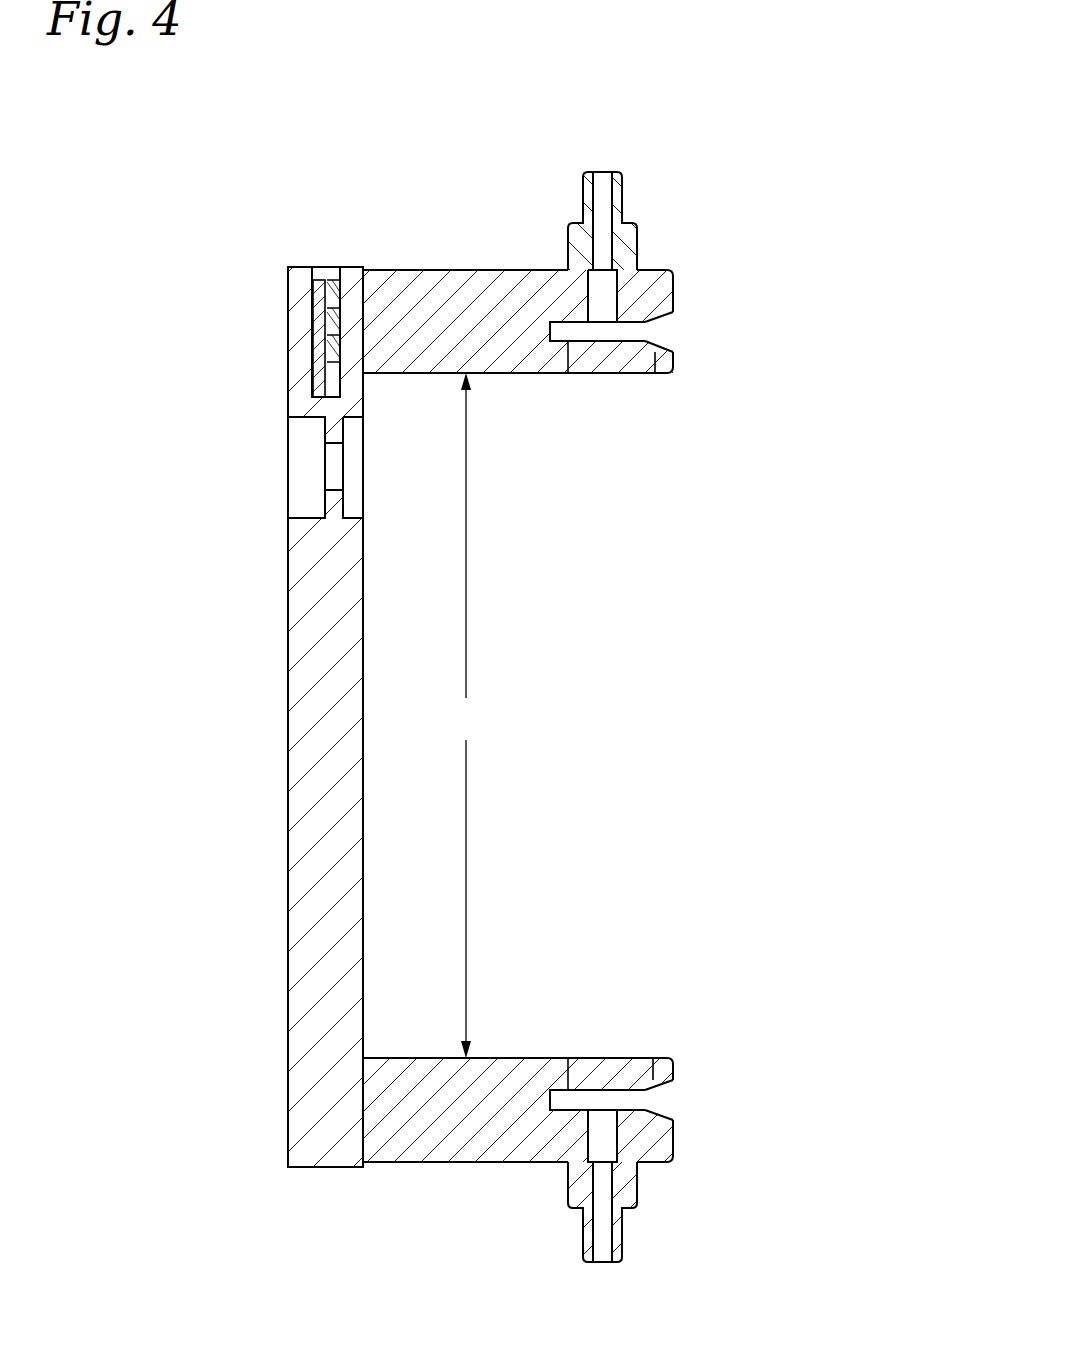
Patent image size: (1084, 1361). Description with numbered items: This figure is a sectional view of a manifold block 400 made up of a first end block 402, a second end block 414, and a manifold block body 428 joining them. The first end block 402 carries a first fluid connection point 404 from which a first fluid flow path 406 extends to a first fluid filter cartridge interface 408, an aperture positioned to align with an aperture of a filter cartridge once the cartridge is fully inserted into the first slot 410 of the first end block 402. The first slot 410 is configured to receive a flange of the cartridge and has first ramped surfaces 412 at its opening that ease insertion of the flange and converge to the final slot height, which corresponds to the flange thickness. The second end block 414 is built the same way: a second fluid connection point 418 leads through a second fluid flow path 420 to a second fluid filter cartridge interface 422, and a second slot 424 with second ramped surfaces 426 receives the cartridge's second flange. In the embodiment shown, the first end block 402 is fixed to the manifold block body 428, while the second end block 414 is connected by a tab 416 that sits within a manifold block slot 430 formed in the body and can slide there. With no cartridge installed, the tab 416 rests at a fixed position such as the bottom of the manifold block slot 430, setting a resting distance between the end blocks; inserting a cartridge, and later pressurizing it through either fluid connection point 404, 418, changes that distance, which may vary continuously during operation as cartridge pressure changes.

The manifold block 400 is at (838, 112).
The first end block 402 is at (433, 1163).
The first fluid connection point 404 is at (590, 1258).
The first fluid flow path 406 is at (600, 1240).
The first fluid filter cartridge interface 408 is at (603, 1110).
The first slot 410 is at (657, 1095).
The first ramped surfaces 412 is at (672, 1105).
The second end block 414 is at (401, 268).
The tab 416 is at (315, 327).
The second fluid connection point 418 is at (618, 173).
The second fluid flow path 420 is at (602, 185).
The second fluid filter cartridge interface 422 is at (607, 323).
The second slot 424 is at (656, 332).
The second ramped surfaces 426 is at (658, 320).
The manifold block body 428 is at (288, 760).
The manifold block slot 430 is at (325, 268).